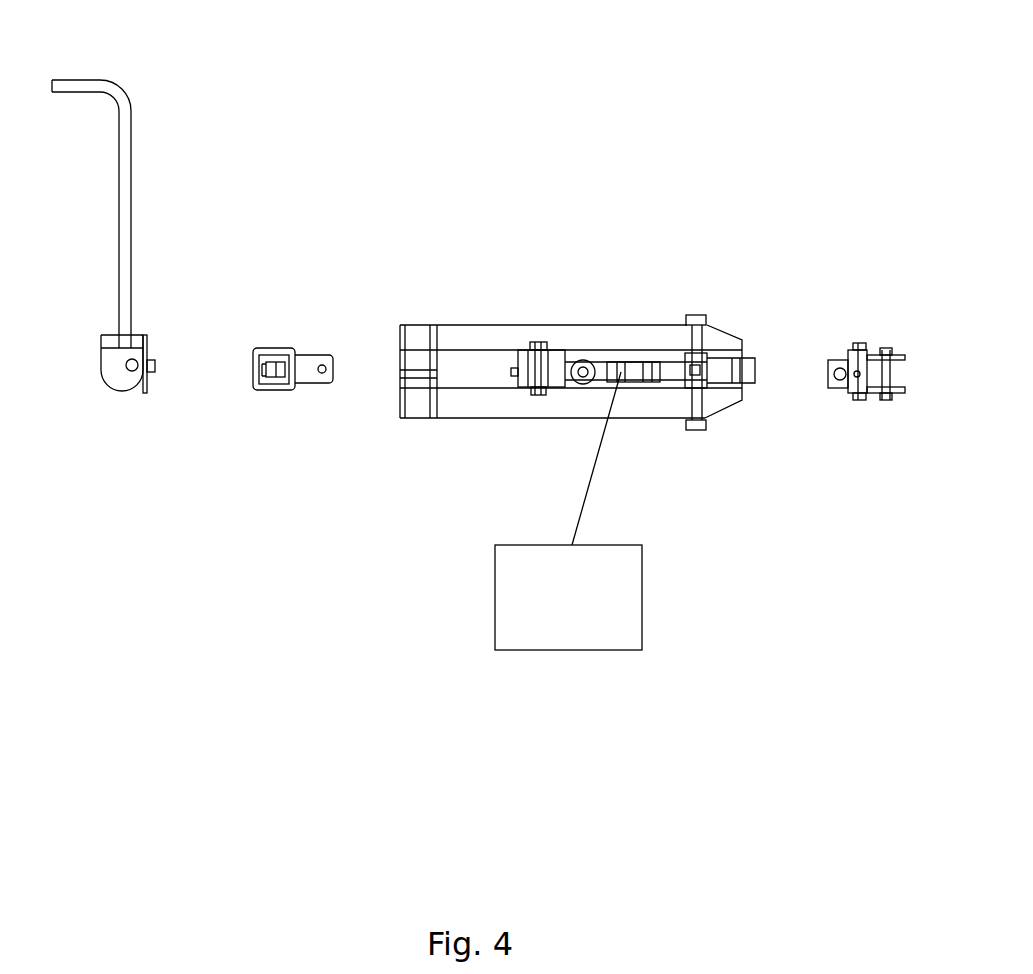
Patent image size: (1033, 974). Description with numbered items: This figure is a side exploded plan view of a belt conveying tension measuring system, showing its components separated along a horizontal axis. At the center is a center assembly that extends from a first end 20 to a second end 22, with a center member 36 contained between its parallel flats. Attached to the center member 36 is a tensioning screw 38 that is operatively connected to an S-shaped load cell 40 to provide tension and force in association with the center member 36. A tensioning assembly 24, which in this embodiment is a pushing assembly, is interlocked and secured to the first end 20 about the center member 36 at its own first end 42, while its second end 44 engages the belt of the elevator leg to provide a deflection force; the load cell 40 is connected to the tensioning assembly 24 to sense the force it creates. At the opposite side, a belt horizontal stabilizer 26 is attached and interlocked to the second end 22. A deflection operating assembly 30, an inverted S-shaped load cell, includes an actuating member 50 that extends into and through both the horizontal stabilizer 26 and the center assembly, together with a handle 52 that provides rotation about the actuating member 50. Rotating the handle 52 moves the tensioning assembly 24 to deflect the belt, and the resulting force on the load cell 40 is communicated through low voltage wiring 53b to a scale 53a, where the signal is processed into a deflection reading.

The first end 20 is at (730, 334).
The second end 22 is at (404, 340).
The tensioning assembly 24 is at (878, 353).
The belt horizontal stabilizer 26 is at (273, 348).
The deflection operating assembly 30 is at (130, 232).
The center member 36 is at (472, 360).
The tensioning screw 38 is at (522, 358).
The S-shaped load cell 40 is at (657, 360).
The first end 42 is at (893, 355).
The second end 44 is at (830, 365).
The actuating member 50 is at (148, 365).
The handle 52 is at (115, 100).
The scale 53a is at (527, 576).
The low voltage wiring 53b is at (590, 473).